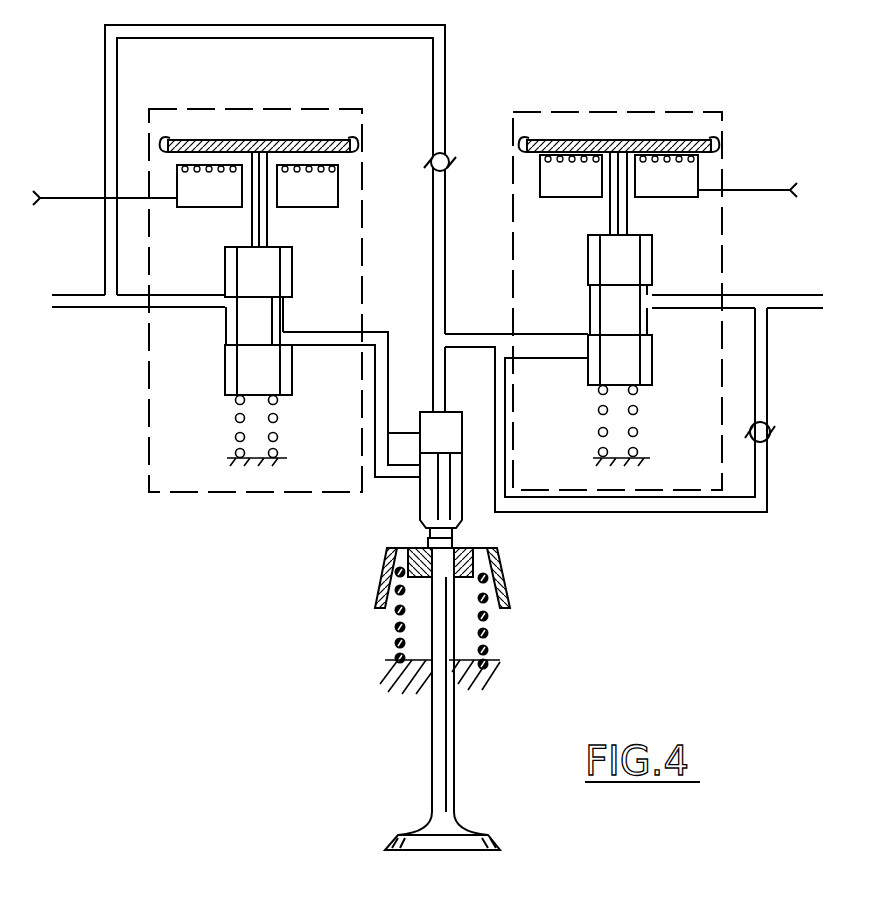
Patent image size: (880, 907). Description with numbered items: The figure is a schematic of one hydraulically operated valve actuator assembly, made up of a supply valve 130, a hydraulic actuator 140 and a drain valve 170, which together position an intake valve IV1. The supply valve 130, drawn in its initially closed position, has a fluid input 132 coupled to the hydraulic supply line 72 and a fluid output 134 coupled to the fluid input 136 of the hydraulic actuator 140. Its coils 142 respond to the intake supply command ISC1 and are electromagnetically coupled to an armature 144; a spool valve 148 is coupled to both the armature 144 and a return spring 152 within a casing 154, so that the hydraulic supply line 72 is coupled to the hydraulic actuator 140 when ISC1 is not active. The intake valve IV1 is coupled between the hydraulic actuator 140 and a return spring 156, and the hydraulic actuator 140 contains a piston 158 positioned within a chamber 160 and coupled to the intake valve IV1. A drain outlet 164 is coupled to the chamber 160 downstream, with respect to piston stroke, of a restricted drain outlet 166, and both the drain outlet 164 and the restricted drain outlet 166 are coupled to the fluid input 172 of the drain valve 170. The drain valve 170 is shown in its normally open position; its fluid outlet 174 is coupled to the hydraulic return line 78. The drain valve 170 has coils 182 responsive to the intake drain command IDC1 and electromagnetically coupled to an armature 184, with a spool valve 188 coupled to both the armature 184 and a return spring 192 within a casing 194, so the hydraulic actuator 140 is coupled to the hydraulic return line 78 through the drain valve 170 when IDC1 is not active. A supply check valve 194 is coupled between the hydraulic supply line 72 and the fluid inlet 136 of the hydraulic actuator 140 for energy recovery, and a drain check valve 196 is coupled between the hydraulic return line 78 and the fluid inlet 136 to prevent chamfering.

The hydraulic supply line 72 is at (790, 312).
The hydraulic return line 78 is at (90, 293).
The supply valve 130 is at (722, 266).
The fluid input 132 is at (653, 306).
The fluid output 134 is at (582, 347).
The fluid input 136 is at (443, 410).
The hydraulic actuator 140 is at (412, 531).
The coils 142 is at (545, 170).
The armature 144 is at (651, 134).
The spool valve 148 is at (652, 255).
The return spring 152 is at (640, 433).
The casing 154 is at (588, 303).
The return spring 156 is at (393, 626).
The piston 158 is at (432, 480).
The chamber 160 is at (456, 529).
The drain outlet 164 is at (413, 478).
The restricted drain outlet 166 is at (420, 425).
The drain valve 170 is at (305, 109).
The fluid input 172 is at (297, 330).
The fluid outlet 174 is at (222, 310).
The coils 182 is at (332, 172).
The armature 184 is at (222, 147).
The spool valve 188 is at (293, 262).
The return spring 192 is at (239, 408).
The casing; supply check valve 194 is at (227, 251).
The drain check valve 196 is at (428, 157).
The intake valve IV1 is at (430, 758).
The intake drain command IDC1 is at (92, 183).
The intake supply command ISC1 is at (754, 179).